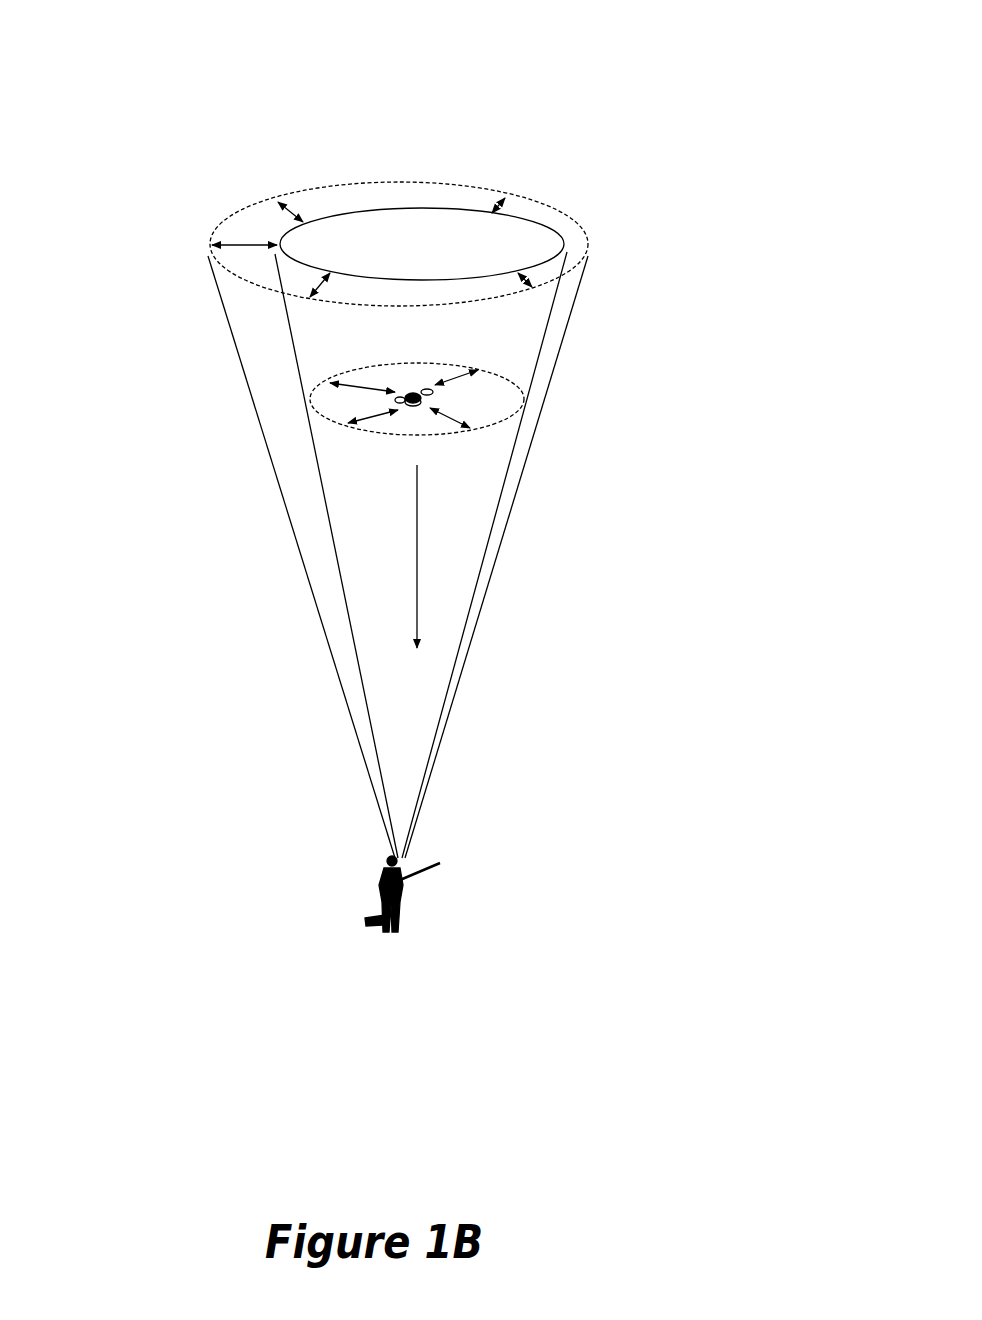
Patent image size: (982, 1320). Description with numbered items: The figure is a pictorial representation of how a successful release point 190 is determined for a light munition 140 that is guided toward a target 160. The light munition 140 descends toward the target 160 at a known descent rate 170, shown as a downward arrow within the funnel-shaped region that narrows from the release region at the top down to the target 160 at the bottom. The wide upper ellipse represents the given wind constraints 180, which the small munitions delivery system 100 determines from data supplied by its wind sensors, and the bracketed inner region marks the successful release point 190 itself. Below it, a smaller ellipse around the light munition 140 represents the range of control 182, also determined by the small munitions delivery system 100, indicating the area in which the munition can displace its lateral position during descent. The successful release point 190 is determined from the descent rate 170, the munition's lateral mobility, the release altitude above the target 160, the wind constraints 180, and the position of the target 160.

The small munitions delivery system 100 is at (745, 30).
The light munition 140 is at (416, 392).
The target 160 is at (405, 897).
The descent rate 170 is at (385, 556).
The wind constraints 180 is at (235, 243).
The range of control 182 is at (490, 427).
The successful release point 190 is at (567, 248).